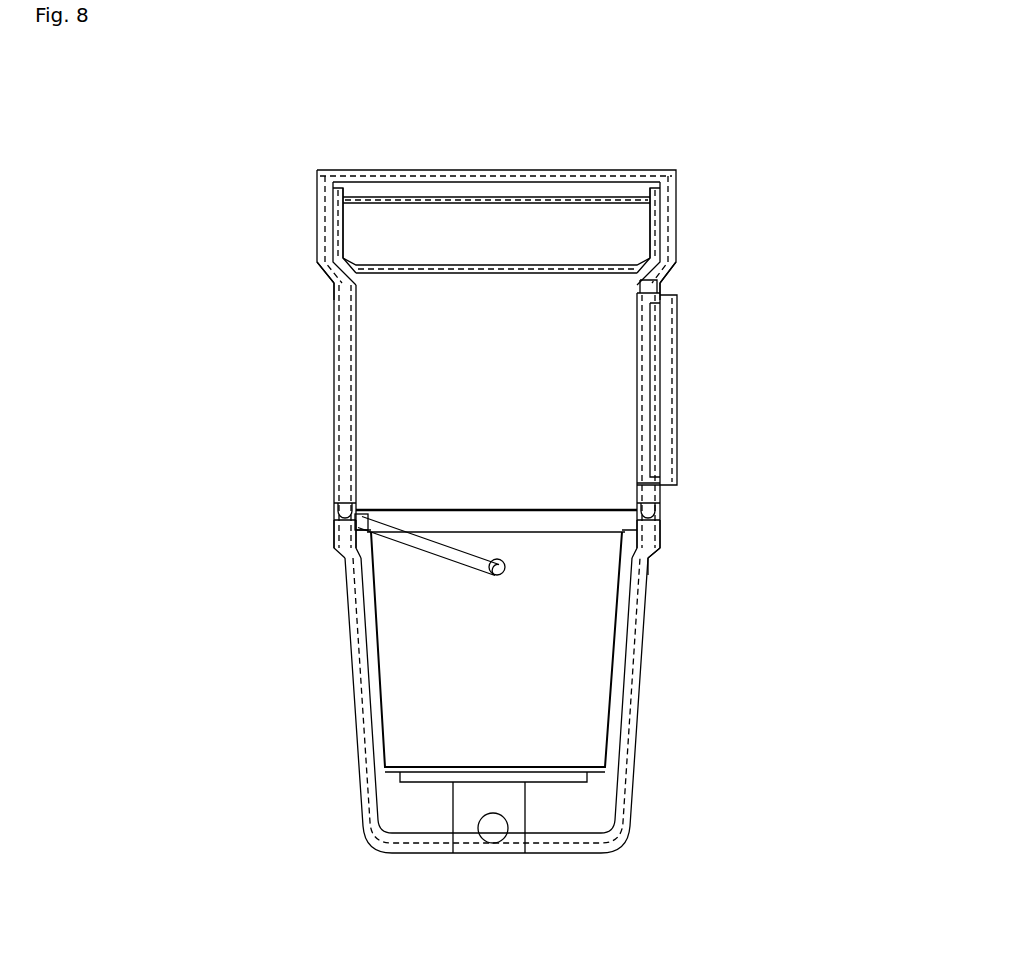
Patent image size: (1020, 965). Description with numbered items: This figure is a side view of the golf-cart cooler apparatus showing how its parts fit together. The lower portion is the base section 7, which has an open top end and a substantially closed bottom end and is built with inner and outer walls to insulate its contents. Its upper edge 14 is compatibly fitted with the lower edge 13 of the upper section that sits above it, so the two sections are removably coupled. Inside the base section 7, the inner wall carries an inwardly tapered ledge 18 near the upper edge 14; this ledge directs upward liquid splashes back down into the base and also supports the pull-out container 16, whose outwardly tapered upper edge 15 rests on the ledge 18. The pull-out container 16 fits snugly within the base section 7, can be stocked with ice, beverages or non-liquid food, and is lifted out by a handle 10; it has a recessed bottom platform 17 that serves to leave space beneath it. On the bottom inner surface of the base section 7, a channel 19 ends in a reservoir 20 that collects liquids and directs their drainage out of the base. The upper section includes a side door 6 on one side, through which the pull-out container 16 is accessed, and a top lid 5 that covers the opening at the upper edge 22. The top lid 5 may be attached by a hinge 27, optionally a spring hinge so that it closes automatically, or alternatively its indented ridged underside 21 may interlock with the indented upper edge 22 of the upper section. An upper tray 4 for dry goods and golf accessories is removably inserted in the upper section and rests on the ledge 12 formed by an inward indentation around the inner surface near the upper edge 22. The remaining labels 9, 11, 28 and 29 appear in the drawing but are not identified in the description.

The upper tray 4 is at (585, 229).
The top lid 5 is at (400, 168).
The side door 6 is at (681, 380).
The base section 7 is at (640, 710).
The right seal 9 is at (665, 509).
The handle 10 is at (402, 529).
The shoulder 11 is at (658, 556).
The ledge 12 is at (319, 279).
The lower edge 13 is at (329, 497).
The upper edge 14 is at (329, 524).
The outwardly tapered upper edge 15 is at (567, 534).
The pull-out container 16 is at (470, 677).
The recessed bottom platform 17 is at (540, 780).
The inwardly tapered ledge 18 is at (659, 538).
The channel 19 is at (493, 856).
The reservoir 20 is at (417, 805).
The indented ridged underside 21 is at (674, 203).
The upper edge 22 is at (663, 171).
The hinge 27 is at (315, 188).
The insulation layer 28 is at (326, 243).
The lever 29 is at (476, 586).